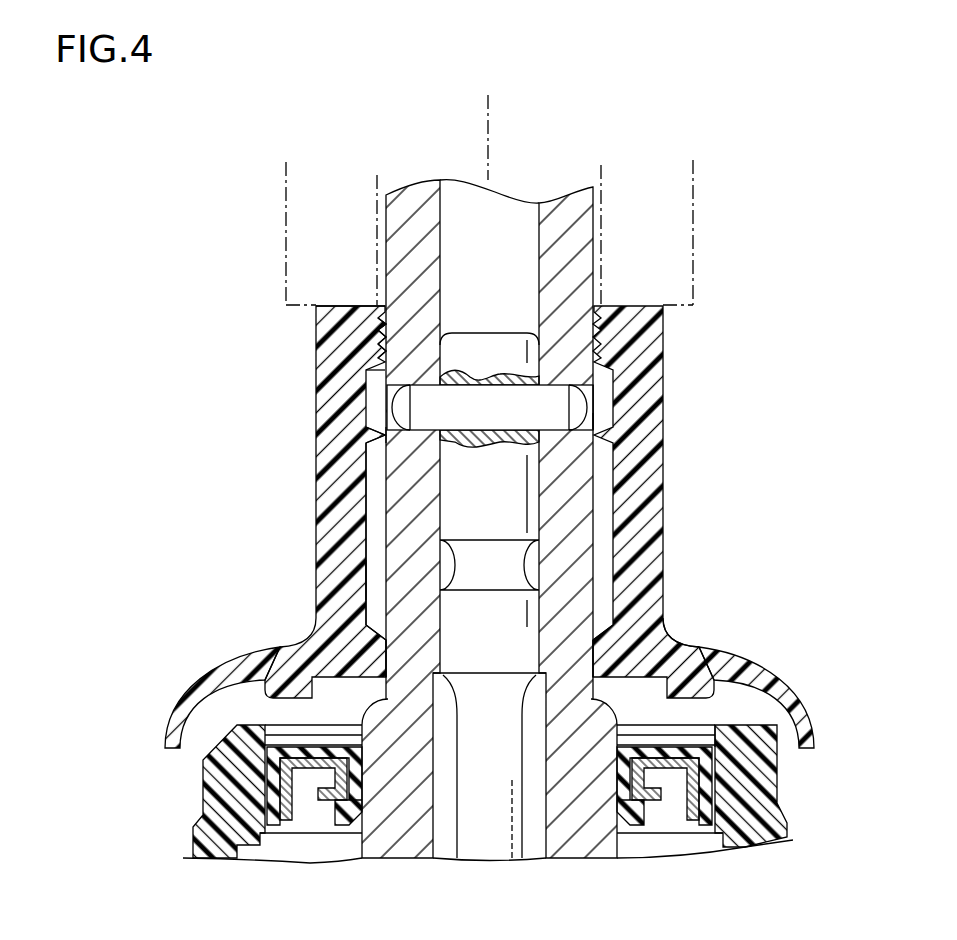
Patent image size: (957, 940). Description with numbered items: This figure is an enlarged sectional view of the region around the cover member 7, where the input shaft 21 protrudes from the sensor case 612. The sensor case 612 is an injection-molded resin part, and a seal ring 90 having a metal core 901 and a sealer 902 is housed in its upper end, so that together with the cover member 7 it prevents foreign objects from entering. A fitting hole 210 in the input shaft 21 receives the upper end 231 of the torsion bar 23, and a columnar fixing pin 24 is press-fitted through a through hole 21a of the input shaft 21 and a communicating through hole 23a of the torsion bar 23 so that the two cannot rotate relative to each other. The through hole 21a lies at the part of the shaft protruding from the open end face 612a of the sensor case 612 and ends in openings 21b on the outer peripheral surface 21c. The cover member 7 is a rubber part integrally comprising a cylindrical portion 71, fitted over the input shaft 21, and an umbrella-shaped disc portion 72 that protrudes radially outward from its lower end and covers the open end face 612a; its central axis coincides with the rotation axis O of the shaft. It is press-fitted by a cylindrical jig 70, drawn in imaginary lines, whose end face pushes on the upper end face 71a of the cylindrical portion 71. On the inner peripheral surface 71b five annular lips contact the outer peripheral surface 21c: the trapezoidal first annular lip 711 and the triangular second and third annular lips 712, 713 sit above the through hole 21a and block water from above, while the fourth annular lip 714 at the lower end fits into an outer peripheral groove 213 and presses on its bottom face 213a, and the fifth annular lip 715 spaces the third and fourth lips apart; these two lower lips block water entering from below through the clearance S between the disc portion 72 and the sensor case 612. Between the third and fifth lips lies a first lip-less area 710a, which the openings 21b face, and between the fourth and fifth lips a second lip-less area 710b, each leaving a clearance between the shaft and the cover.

The cover member 7 is at (261, 527).
The cylindrical portion 71 is at (316, 588).
The disc portion 72 is at (235, 655).
The upper end face 71a is at (338, 305).
The inner peripheral surface 71b is at (374, 586).
The first annular lip 711 is at (384, 323).
The second annular lip 712 is at (384, 338).
The third annular lip 713 is at (384, 353).
The first lip-less area 710a is at (368, 388).
The second lip-less area 710b is at (372, 545).
The fourth annular lip 714 is at (380, 657).
The fifth annular lip 715 is at (372, 437).
The input shaft 21 is at (593, 257).
The through hole 21a is at (598, 390).
The openings 21b is at (381, 424).
The outer peripheral surface 21c is at (620, 505).
The fitting hole 210 is at (606, 641).
The outer peripheral groove 213 is at (593, 659).
The bottom face 213a is at (672, 628).
The torsion bar 23 is at (490, 845).
The upper end 231 is at (462, 340).
The through hole 23a is at (483, 385).
The fixing pin 24 is at (602, 410).
The jig 70 is at (697, 187).
The sensor case 612 is at (762, 821).
The open end face 612a is at (727, 725).
The seal ring 90 is at (394, 786).
The metal core 901 is at (285, 795).
The sealer 902 is at (292, 815).
The rotation axis O is at (492, 130).
The clearance S is at (787, 751).